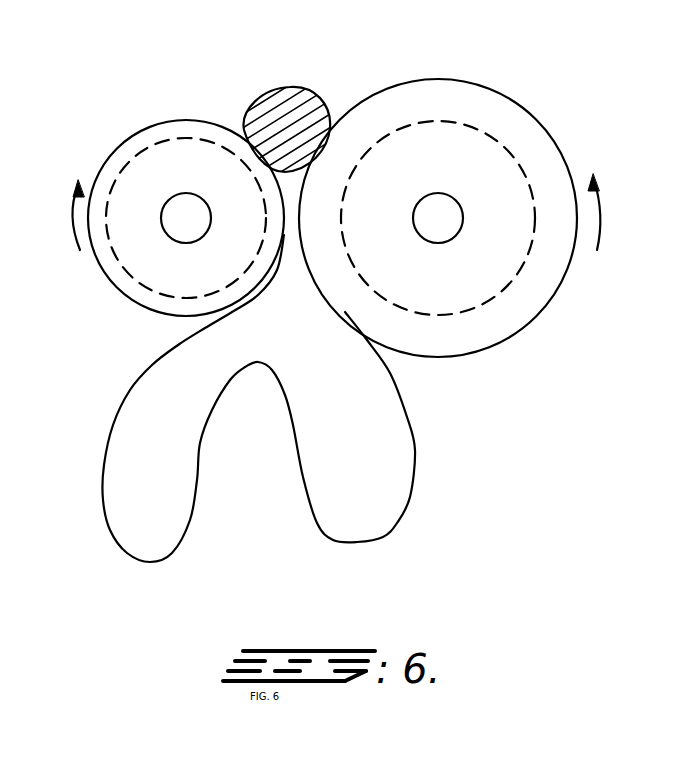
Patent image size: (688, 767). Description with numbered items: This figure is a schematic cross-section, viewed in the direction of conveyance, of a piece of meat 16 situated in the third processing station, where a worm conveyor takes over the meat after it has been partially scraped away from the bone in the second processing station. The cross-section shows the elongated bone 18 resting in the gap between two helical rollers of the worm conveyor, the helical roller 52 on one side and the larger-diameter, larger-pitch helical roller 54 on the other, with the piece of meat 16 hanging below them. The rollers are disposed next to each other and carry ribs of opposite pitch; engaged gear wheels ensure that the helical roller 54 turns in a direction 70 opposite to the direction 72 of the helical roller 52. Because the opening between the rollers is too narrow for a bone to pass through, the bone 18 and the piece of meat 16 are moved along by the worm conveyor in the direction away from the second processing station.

The piece of meat 16 is at (398, 438).
The elongated bone 18 is at (289, 101).
The helical roller 52 is at (143, 177).
The helical roller 54 is at (517, 128).
The direction of rotation 70 is at (598, 218).
The direction of rotation 72 is at (70, 226).